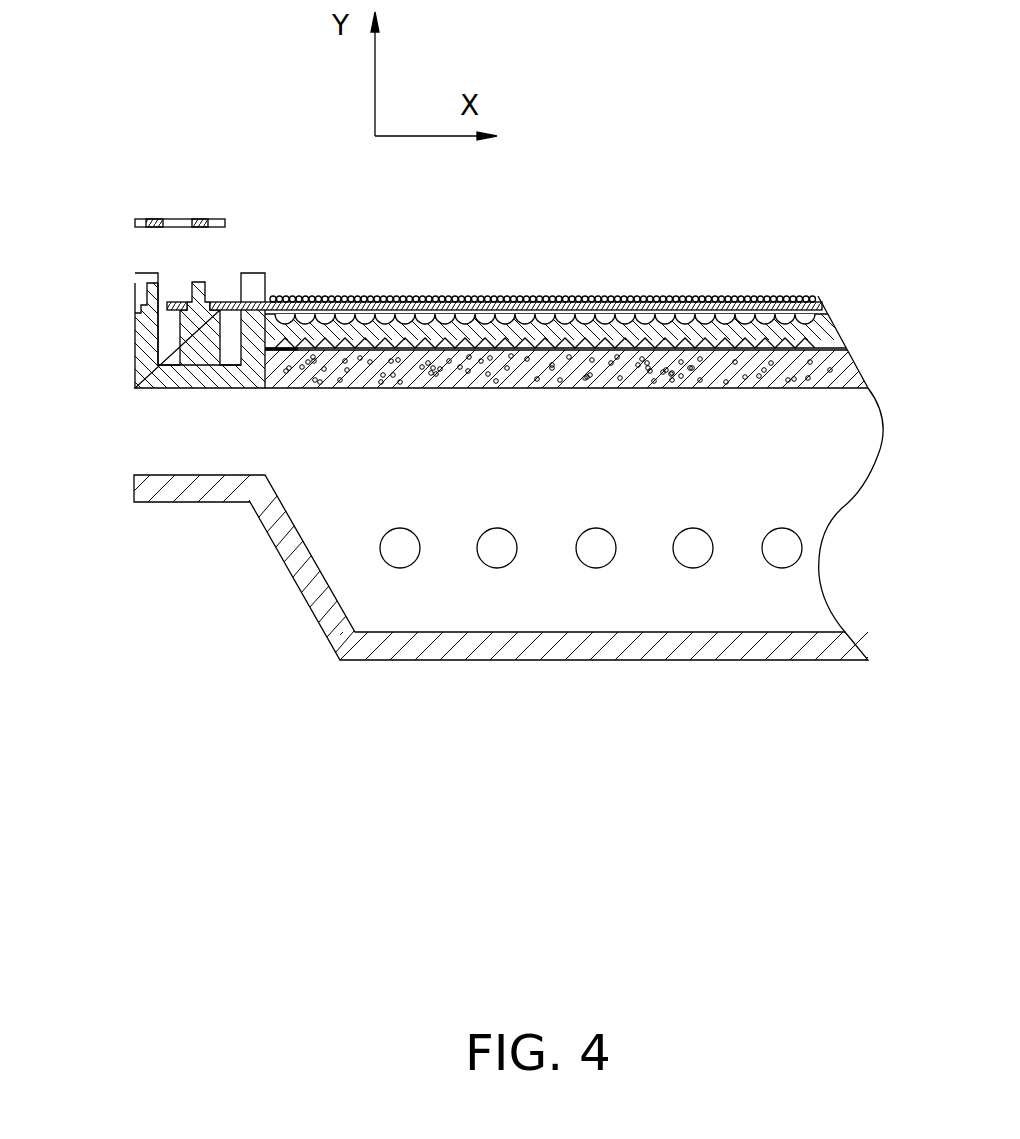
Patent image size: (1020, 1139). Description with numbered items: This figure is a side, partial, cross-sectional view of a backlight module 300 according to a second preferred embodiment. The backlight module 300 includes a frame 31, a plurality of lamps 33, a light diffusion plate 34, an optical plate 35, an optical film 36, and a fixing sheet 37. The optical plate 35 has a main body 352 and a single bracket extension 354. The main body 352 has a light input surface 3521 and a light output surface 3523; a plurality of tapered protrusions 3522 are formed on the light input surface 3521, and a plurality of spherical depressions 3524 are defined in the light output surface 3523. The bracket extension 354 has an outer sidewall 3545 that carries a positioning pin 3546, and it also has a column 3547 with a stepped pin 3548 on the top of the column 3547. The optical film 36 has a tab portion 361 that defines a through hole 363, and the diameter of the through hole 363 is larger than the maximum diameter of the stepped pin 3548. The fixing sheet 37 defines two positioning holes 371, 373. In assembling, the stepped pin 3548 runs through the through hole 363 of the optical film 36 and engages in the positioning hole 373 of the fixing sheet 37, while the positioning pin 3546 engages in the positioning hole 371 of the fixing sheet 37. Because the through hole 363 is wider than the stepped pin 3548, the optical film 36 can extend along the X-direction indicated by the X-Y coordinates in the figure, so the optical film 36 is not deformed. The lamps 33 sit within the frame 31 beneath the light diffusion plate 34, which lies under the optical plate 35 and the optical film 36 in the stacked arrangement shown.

The backlight module 300 is at (577, 186).
The frame 31 is at (746, 652).
The lamps 33 is at (781, 548).
The light diffusion plate 34 is at (706, 386).
The optical plate 35 is at (545, 318).
The main body 352 is at (703, 330).
The light input surface 3521 is at (440, 355).
The tapered protrusions 3522 is at (548, 372).
The light output surface 3523 is at (392, 306).
The spherical depressions 3524 is at (303, 322).
The bracket extension 354 is at (168, 390).
The outer sidewall 3545 is at (135, 330).
The positioning pin 3546 is at (134, 278).
The column 3547 is at (200, 347).
The stepped pin 3548 is at (200, 282).
The optical film 36 is at (487, 302).
The tab portion 361 is at (227, 300).
The through hole 363 is at (185, 297).
The fixing sheet 37 is at (178, 218).
The positioning hole 371 is at (152, 218).
The positioning hole 373 is at (206, 218).